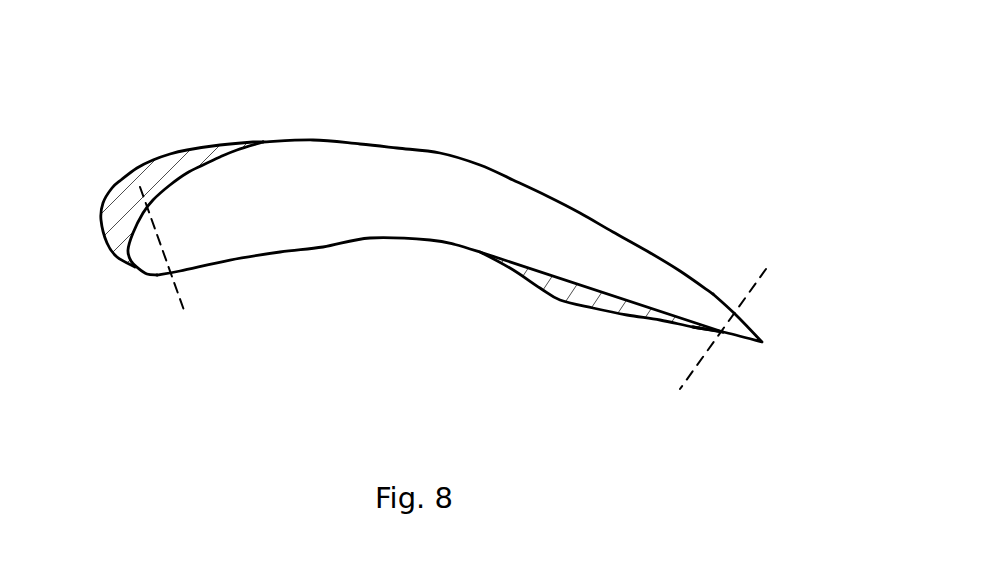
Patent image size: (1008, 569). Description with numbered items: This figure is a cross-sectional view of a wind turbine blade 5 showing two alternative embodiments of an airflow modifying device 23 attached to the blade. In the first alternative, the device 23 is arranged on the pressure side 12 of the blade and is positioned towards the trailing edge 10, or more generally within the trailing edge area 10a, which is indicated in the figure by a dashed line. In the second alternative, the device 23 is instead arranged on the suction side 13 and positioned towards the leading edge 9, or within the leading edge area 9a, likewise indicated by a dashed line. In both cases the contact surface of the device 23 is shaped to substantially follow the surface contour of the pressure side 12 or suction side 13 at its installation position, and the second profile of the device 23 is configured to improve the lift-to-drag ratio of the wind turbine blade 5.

The wind turbine blade 5 is at (469, 241).
The suction side 13 is at (368, 142).
The pressure side 12 is at (323, 247).
The leading edge 9 is at (135, 267).
The leading edge area 9a is at (153, 282).
The trailing edge 10 is at (753, 343).
The trailing edge area 10a is at (753, 318).
The device 23 is at (98, 178).